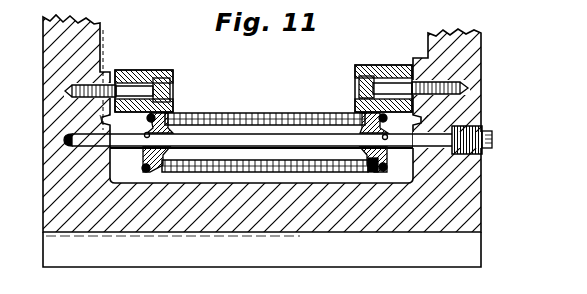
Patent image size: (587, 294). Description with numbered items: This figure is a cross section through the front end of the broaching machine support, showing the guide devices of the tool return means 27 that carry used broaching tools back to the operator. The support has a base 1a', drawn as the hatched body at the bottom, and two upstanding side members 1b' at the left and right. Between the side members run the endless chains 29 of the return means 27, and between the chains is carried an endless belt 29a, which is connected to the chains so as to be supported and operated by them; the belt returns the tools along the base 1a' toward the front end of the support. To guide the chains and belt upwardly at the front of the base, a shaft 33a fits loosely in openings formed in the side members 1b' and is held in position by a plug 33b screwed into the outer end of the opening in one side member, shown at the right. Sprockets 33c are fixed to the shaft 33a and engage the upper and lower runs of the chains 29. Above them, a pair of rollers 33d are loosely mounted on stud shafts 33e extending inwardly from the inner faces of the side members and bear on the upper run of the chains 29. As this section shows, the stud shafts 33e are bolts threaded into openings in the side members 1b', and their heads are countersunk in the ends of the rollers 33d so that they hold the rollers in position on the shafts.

The side members 1b' is at (264, 123).
The base 1a' is at (262, 257).
The stud shafts 33e is at (132, 84).
The rollers 33d is at (158, 74).
The endless chains 29 is at (147, 169).
The endless belt 29a is at (242, 112).
The return means 27 is at (273, 119).
The shaft 33a is at (304, 144).
The plug 33b is at (485, 129).
The sprockets 33c is at (264, 148).